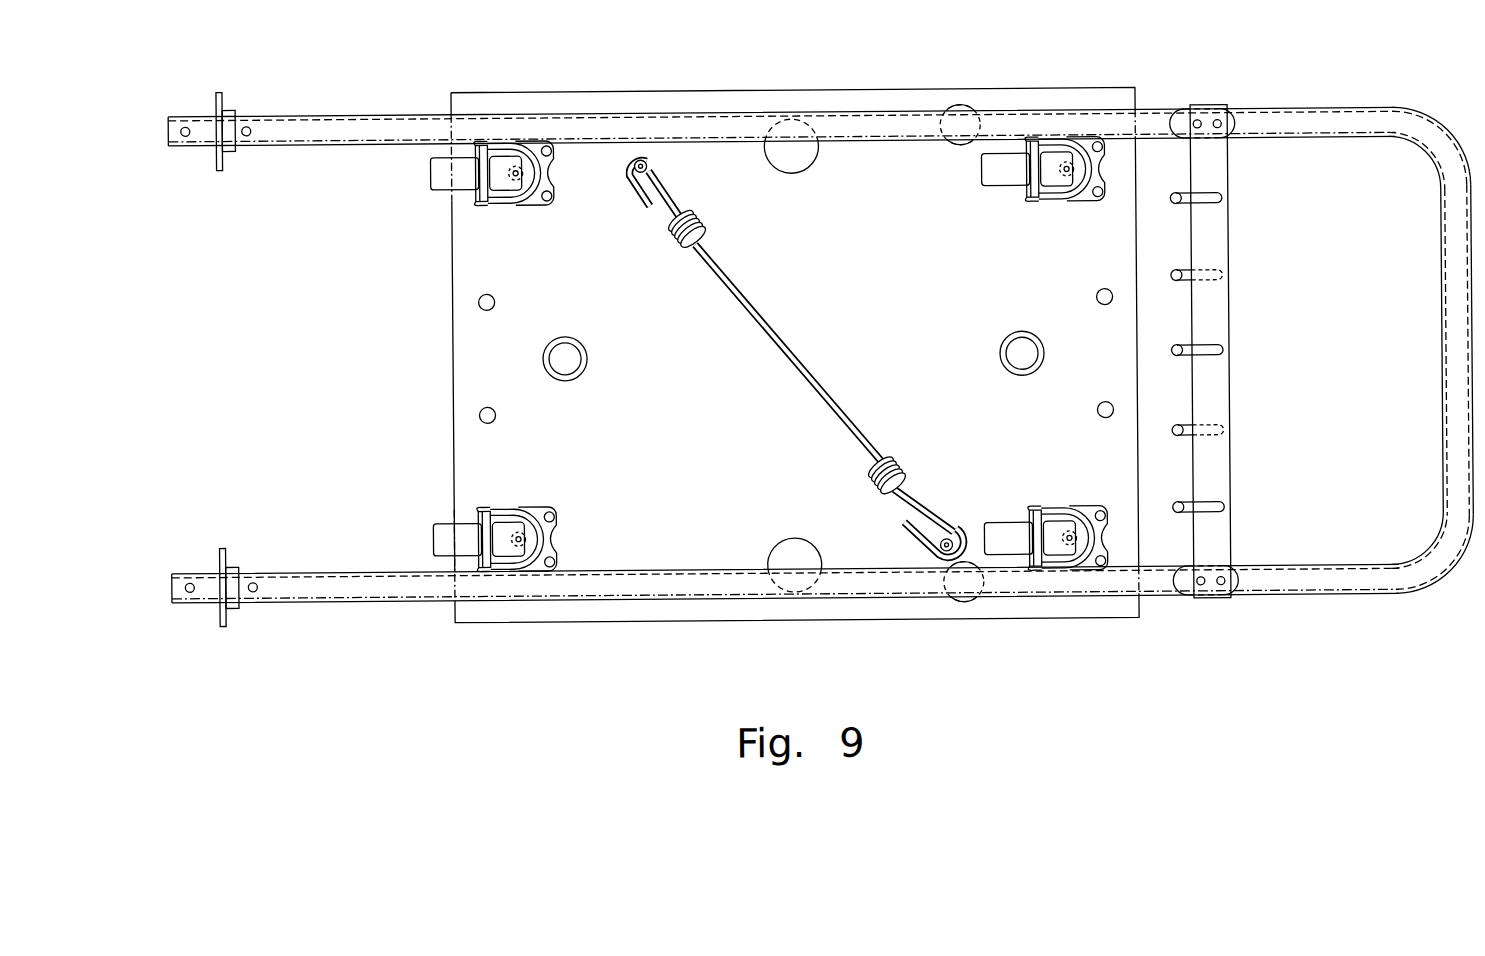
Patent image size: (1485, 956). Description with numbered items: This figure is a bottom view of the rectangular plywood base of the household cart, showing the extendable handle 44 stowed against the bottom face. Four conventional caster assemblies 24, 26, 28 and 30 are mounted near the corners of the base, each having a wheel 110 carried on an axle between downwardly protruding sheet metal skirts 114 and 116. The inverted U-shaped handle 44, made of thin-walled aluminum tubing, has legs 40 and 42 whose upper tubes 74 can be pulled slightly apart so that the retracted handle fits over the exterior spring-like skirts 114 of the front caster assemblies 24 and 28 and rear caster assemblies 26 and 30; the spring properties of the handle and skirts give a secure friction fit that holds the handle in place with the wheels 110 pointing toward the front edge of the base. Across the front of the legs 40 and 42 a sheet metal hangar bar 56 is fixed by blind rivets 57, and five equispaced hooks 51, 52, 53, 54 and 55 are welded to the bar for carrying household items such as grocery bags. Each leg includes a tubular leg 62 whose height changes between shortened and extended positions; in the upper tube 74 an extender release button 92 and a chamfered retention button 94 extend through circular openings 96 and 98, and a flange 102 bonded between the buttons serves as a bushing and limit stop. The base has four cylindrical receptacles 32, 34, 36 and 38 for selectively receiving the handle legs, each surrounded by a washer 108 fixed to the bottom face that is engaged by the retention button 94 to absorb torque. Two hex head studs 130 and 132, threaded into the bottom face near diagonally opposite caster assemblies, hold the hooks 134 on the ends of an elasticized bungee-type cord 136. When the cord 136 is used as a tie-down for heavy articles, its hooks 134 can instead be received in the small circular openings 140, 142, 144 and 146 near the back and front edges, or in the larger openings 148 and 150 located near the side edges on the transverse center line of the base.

The caster assembly 24 is at (534, 207).
The caster assembly 26 is at (1074, 212).
The caster assembly 28 is at (550, 500).
The caster assembly 30 is at (1072, 503).
The receptacle 32 is at (948, 112).
The receptacle 34 is at (976, 600).
The receptacle 36 is at (1012, 346).
The receptacle 38 is at (568, 350).
The leg 40 is at (1322, 598).
The leg 42 is at (1303, 112).
The extendable handle 44 is at (1441, 330).
The hook 51 is at (1180, 196).
The hook 52 is at (1178, 273).
The hook 53 is at (1178, 348).
The hook 54 is at (1178, 428).
The hook 55 is at (1178, 505).
The hangar bar 56 is at (1230, 385).
The blind rivet 57 is at (1219, 122).
The tubular leg 62 is at (1443, 452).
The upper tube 74 is at (391, 112).
The extender release button 92 is at (252, 123).
The chamfered retention button 94 is at (187, 122).
The circular opening 96 is at (255, 133).
The circular opening 98 is at (190, 140).
The flange 102 is at (236, 152).
The washer 108 is at (968, 110).
The wheel 110 is at (438, 175).
The skirt 114 is at (520, 141).
The skirt 116 is at (512, 201).
The stud 130 is at (652, 163).
The stud 132 is at (922, 540).
The hook 134 is at (700, 222).
The elasticized cord 136 is at (798, 364).
The circular opening 140 is at (1102, 406).
The circular opening 142 is at (1097, 297).
The circular opening 144 is at (480, 303).
The circular opening 146 is at (480, 414).
The circular opening 148 is at (802, 158).
The circular opening 150 is at (785, 558).